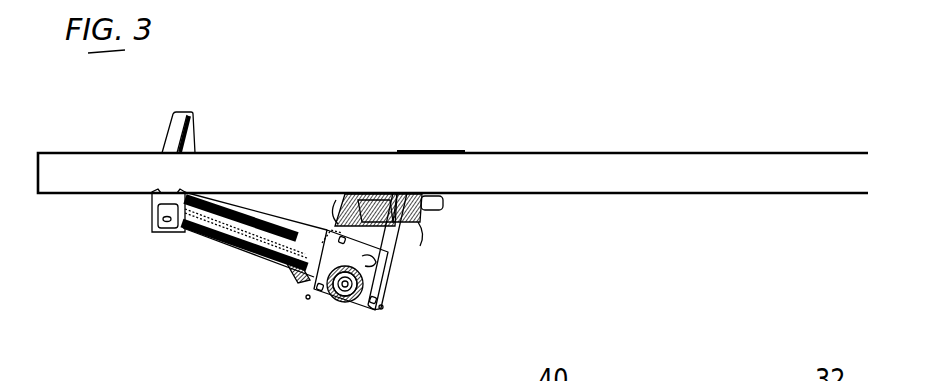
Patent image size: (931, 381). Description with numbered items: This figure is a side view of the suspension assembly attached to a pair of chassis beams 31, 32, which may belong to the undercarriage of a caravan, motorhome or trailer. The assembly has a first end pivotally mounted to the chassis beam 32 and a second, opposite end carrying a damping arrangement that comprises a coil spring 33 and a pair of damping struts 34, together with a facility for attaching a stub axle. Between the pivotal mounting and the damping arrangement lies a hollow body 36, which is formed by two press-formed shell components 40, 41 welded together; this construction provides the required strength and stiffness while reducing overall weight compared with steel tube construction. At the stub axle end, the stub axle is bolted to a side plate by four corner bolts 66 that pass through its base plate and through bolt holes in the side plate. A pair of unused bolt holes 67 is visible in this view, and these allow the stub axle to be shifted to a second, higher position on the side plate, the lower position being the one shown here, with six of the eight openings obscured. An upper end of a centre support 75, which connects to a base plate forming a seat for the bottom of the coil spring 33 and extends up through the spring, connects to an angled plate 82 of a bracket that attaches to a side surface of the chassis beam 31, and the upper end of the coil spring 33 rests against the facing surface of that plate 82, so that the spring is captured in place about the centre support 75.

The chassis beam 31 is at (680, 168).
The chassis beam 32 is at (188, 115).
The coil spring 33 is at (337, 222).
The damping struts 34 is at (410, 250).
The hollow body 36 is at (217, 229).
The shell component 40 is at (228, 228).
The shell component 41 is at (228, 228).
The corner bolts 66 is at (400, 258).
The unused bolt holes 67 is at (420, 214).
The centre support 75 is at (328, 297).
The angled plate 82 is at (355, 210).